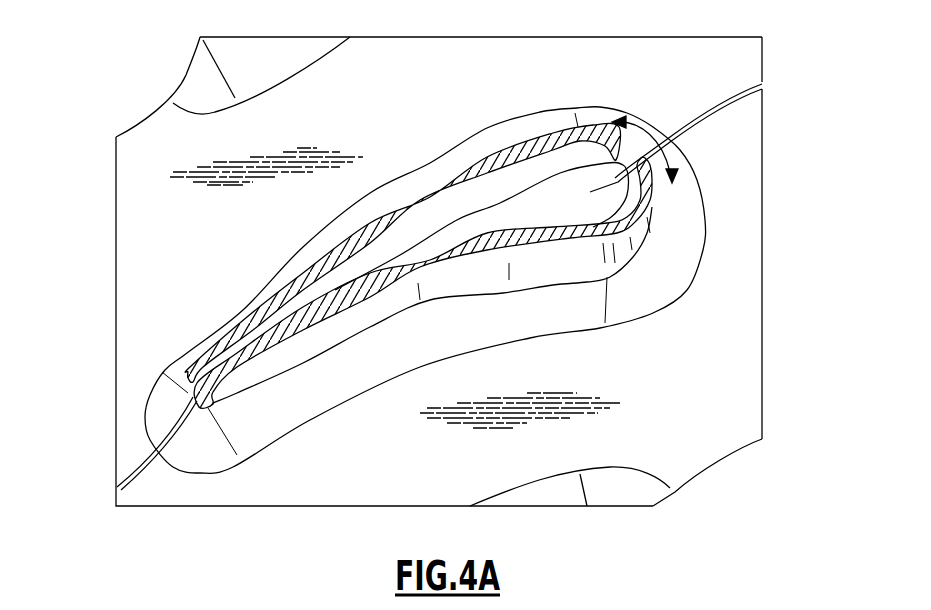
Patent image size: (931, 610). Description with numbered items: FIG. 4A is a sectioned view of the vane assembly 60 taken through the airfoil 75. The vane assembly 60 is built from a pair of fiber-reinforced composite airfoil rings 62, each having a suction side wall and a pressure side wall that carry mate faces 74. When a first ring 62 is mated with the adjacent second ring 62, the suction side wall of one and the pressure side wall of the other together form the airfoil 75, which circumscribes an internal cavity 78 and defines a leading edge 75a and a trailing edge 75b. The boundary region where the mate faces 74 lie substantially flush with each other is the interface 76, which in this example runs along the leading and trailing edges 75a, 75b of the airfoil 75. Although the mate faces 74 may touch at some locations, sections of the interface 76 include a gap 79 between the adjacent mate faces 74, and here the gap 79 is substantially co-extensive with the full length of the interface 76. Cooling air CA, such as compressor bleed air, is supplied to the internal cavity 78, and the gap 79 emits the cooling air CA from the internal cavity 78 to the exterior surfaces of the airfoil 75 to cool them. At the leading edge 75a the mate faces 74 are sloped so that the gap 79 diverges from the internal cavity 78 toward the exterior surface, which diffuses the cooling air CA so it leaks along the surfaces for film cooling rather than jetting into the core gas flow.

The vane assembly 60 is at (103, 362).
The fiber-reinforced composite airfoil ring 62 is at (732, 172).
The mate face 74 is at (133, 486).
The airfoil 75 is at (472, 168).
The leading edge 75a is at (637, 108).
The trailing edge 75b is at (238, 403).
The interface 76 is at (709, 99).
The internal cavity 78 is at (566, 221).
The gap 79 is at (623, 149).
The cooling air CA is at (680, 150).